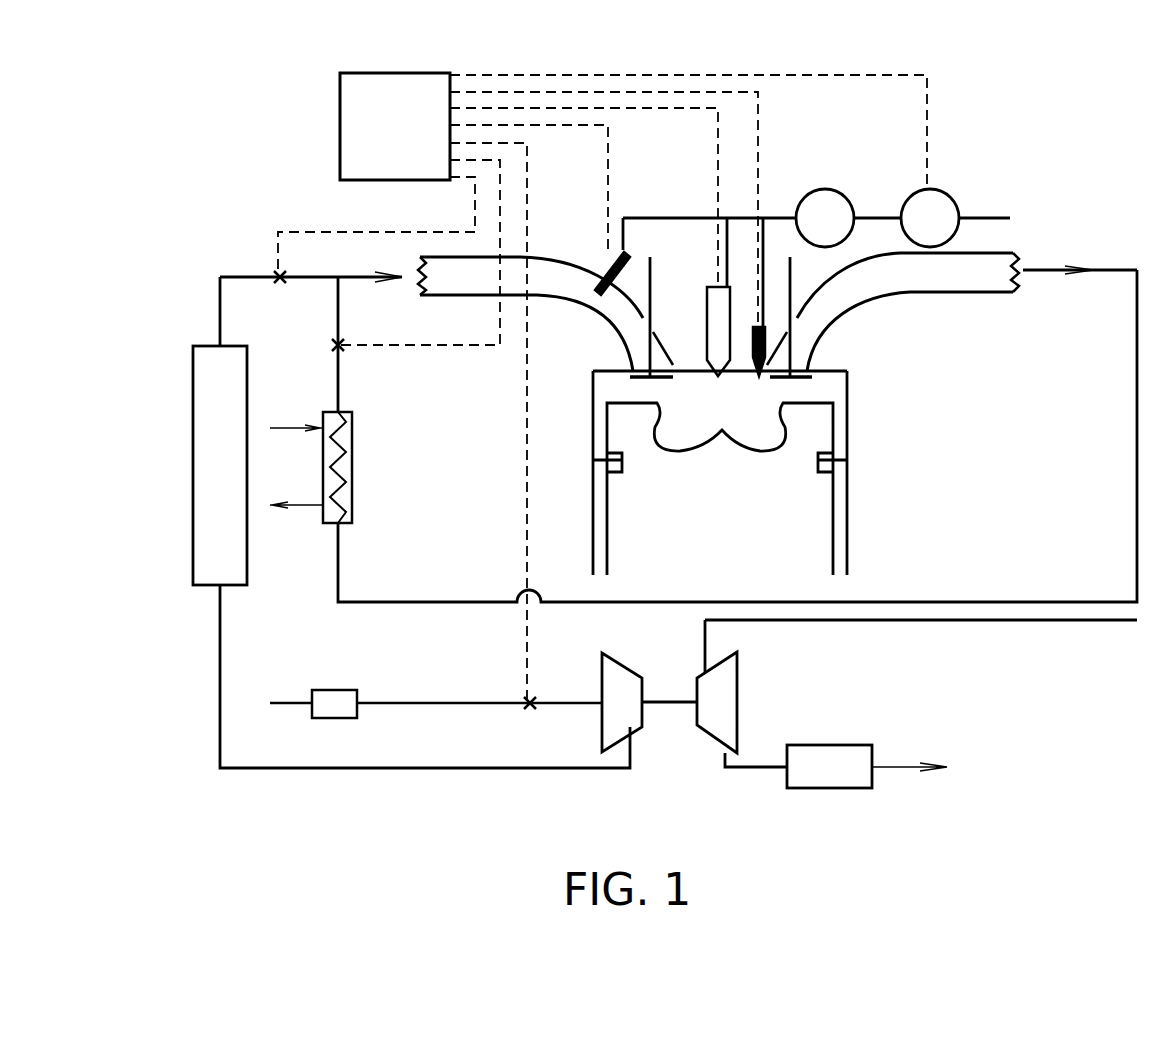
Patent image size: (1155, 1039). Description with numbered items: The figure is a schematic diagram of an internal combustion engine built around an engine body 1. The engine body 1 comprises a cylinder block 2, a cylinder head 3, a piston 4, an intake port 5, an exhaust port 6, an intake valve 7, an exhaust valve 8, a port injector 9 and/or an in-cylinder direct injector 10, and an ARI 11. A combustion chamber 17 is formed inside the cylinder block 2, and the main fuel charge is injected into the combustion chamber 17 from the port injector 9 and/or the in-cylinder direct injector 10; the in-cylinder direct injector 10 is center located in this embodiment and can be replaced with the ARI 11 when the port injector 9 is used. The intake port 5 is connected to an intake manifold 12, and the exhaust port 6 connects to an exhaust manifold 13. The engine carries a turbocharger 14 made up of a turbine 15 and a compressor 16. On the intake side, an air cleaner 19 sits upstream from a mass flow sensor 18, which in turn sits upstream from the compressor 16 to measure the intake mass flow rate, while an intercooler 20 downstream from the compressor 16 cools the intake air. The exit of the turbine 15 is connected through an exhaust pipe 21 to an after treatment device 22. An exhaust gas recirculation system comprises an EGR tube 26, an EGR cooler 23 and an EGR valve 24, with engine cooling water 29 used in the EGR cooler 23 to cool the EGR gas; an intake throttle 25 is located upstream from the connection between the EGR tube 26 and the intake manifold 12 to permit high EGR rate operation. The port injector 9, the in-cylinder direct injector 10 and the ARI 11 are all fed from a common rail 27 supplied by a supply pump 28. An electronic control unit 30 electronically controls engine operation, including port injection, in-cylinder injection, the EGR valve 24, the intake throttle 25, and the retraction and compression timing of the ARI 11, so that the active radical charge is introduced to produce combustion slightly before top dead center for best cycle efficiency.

The engine body 1 is at (592, 542).
The cylinder block 2 is at (849, 385).
The cylinder head 3 is at (838, 353).
The piston 4 is at (835, 541).
The intake port 5 is at (545, 314).
The exhaust port 6 is at (852, 315).
The intake valve 7 is at (653, 303).
The exhaust valve 8 is at (792, 284).
The port injector 9 is at (600, 268).
The in-cylinder direct injector 10 is at (710, 284).
The ARI 11 is at (764, 333).
The intake manifold 12 is at (381, 276).
The exhaust manifold 13 is at (1047, 272).
The turbocharger 14 is at (658, 698).
The turbine 15 is at (742, 668).
The compressor 16 is at (633, 729).
The combustion chamber 17 is at (606, 385).
The mass flow sensor 18 is at (530, 709).
The air cleaner 19 is at (335, 720).
The intercooler 20 is at (193, 555).
The exhaust pipe 21 is at (756, 748).
The after treatment device 22 is at (835, 744).
The EGR cooler 23 is at (355, 465).
The EGR valve 24 is at (344, 347).
The intake throttle 25 is at (283, 284).
The EGR tube 26 is at (658, 601).
The common rail 27 is at (823, 189).
The supply pump 28 is at (950, 189).
The engine cooling water 29 is at (285, 431).
The electronic control unit (ECU) 30 is at (340, 137).